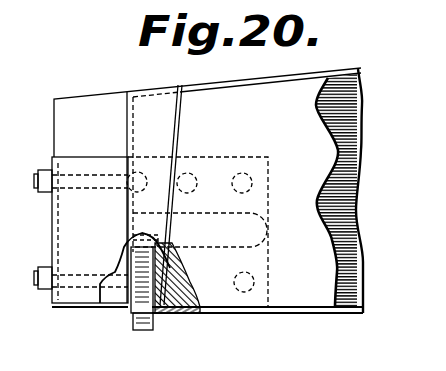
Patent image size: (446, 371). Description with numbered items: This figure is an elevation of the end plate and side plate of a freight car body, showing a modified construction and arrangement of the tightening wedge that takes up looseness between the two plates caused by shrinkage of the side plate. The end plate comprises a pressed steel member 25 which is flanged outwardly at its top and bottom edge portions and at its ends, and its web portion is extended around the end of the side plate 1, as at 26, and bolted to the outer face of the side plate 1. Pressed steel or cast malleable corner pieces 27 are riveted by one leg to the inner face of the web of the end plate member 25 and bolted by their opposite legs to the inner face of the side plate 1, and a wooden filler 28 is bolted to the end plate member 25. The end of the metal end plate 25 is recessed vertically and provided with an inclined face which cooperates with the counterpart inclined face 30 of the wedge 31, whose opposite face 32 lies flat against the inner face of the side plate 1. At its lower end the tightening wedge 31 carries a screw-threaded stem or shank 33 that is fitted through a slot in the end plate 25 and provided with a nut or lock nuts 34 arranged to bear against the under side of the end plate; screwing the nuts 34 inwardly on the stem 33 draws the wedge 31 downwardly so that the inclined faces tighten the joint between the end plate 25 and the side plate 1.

The side plate 1 is at (70, 117).
The pressed steel end plate member 25 is at (341, 235).
The extended web portion 26 is at (81, 232).
The corner piece 27 is at (268, 268).
The wooden filler 28 is at (220, 225).
The inclined face 30 is at (176, 130).
The wedge 31 is at (160, 128).
The opposite face 32 is at (124, 116).
The screw-threaded stem 33 is at (148, 289).
The lock nuts 34 is at (148, 333).